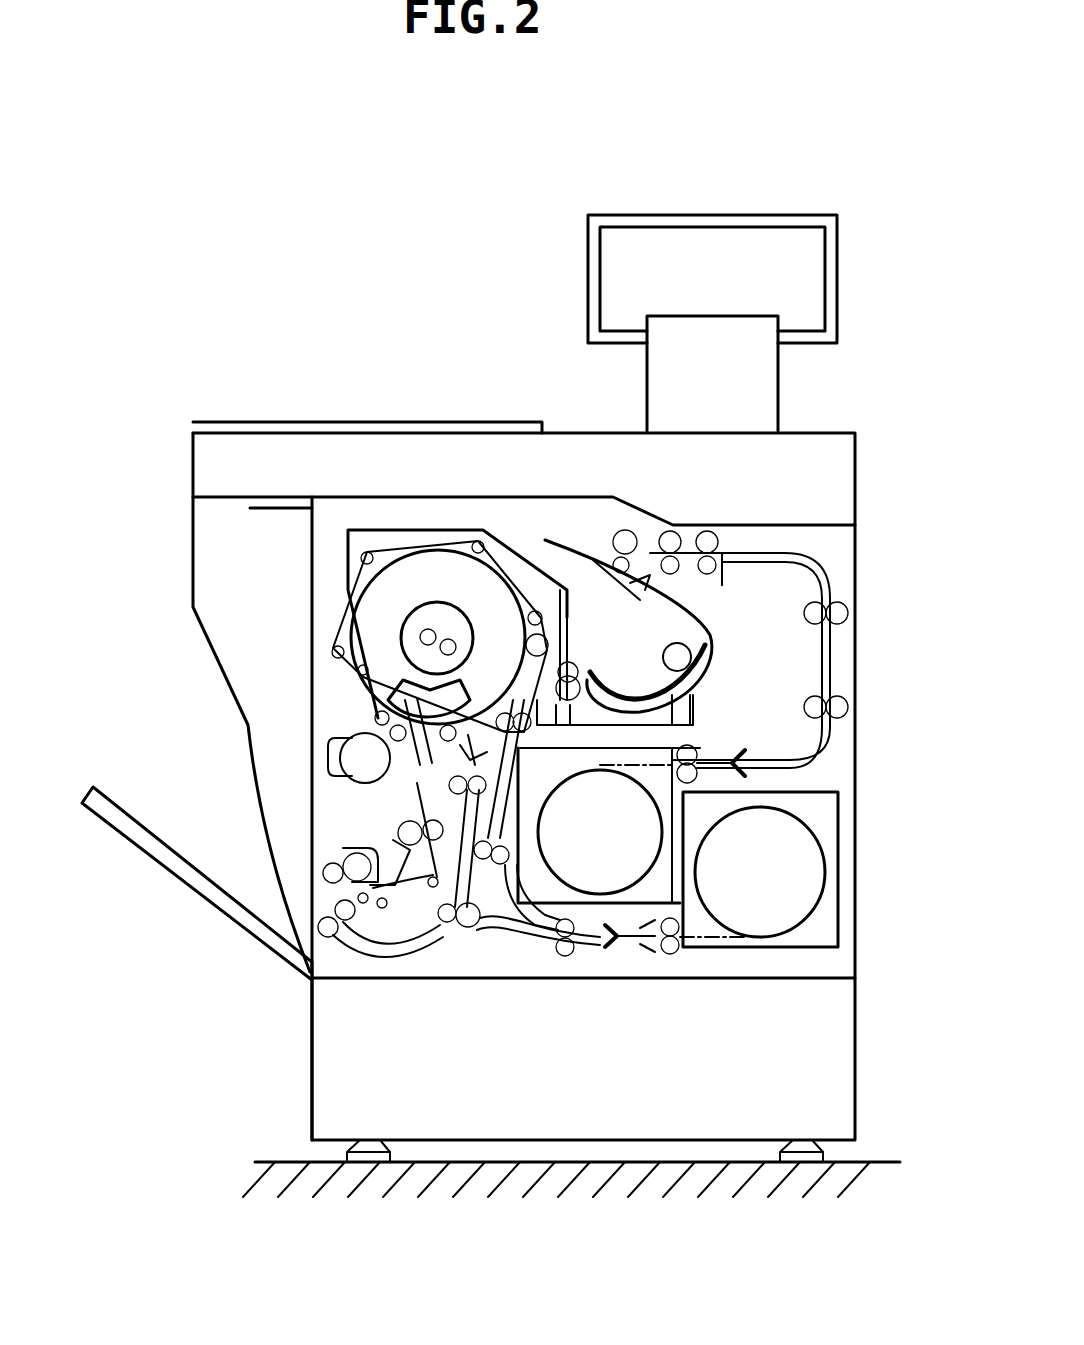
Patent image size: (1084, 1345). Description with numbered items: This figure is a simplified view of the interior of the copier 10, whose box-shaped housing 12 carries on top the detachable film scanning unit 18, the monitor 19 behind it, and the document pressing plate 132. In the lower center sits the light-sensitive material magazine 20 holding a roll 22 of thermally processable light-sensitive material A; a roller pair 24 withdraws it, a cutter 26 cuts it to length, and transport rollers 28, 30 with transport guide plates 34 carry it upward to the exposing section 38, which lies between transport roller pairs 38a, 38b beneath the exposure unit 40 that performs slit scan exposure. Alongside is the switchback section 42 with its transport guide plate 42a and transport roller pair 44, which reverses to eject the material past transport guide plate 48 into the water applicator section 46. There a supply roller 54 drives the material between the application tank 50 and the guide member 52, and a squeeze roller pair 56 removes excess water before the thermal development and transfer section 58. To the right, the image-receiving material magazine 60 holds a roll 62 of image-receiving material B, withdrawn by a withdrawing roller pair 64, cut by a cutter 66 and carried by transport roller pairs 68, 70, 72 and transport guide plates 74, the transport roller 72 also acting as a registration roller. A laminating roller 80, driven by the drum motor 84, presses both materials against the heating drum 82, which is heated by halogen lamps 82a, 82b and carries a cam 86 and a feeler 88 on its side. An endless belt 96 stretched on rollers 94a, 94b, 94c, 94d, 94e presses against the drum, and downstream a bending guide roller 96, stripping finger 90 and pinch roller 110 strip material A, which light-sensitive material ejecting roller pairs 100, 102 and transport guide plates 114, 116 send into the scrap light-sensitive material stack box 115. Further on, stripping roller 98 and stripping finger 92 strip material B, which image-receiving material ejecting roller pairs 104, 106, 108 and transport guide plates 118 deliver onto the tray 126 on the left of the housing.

The copier 10 is at (425, 355).
The housing 12 is at (872, 468).
The film scanning unit 18 is at (690, 370).
The monitor 19 is at (622, 252).
The light-sensitive material magazine 20 is at (513, 943).
The roll 22 is at (648, 950).
The roller pair 24 is at (652, 800).
The cutter 26 is at (738, 750).
The transport roller 28 is at (848, 707).
The transport roller 30 is at (848, 613).
The transport guide plates 34 is at (840, 665).
The exposing section 38 is at (700, 500).
The transport roller pair 38a is at (710, 530).
The transport roller pair 38b is at (670, 530).
The exposure unit 40 is at (457, 488).
The switchback section 42 is at (528, 517).
The transport guide plate 42a is at (438, 527).
The transport roller pair 44 is at (625, 530).
The water applicator section 46 is at (618, 655).
The transport guide plate 48 is at (707, 607).
The application tank 50 is at (700, 687).
The guide member 52 is at (650, 677).
The supply roller 54 is at (697, 655).
The squeeze roller pair 56 is at (575, 662).
The thermal development and transfer section 58 is at (312, 588).
The image-receiving material magazine 60 is at (820, 948).
The roll 62 is at (783, 950).
The withdrawing roller pair 64 is at (670, 950).
The cutter 66 is at (615, 945).
The transport roller pair 68 is at (578, 950).
The transport roller pair 70 is at (478, 935).
The transport roller pair 72 is at (547, 742).
The transport guide plates 74 is at (597, 957).
The laminating roller 80 is at (545, 622).
The heating drum 82 is at (351, 630).
The halogen lamp 82a is at (428, 628).
The halogen lamp 82b is at (450, 638).
The drum motor 84 is at (340, 760).
The cam 86 is at (472, 652).
The feeler 88 is at (365, 668).
The stripping finger 90 is at (345, 680).
The stripping finger 92 is at (492, 715).
The roller 94a is at (560, 575).
The roller 94b is at (478, 541).
The roller 94c is at (370, 552).
The roller 94d is at (332, 652).
The roller 94e is at (380, 715).
The bending guide roller 96 is at (330, 595).
The stripping roller 98 is at (533, 803).
The light-sensitive material ejecting roller pair 100 is at (397, 823).
The light-sensitive material ejecting roller pair 102 is at (322, 868).
The image-receiving material ejecting roller pair 104 is at (540, 820).
The image-receiving material ejecting roller pair 106 is at (465, 930).
The image-receiving material ejecting roller pair 108 is at (312, 978).
The pinch roller 110 is at (365, 860).
The transport guide plate 114 is at (395, 905).
The scrap light-sensitive material stack box 115 is at (195, 535).
The transport guide plate 116 is at (310, 798).
The transport guide plates 118 is at (398, 905).
The tray 126 is at (118, 833).
The document pressing plate 132 is at (283, 430).
The thermally processable light-sensitive material A is at (680, 745).
The image-receiving material B is at (712, 948).